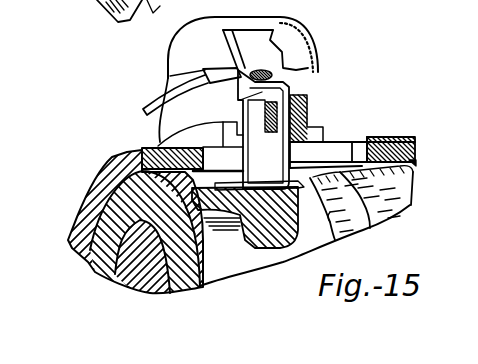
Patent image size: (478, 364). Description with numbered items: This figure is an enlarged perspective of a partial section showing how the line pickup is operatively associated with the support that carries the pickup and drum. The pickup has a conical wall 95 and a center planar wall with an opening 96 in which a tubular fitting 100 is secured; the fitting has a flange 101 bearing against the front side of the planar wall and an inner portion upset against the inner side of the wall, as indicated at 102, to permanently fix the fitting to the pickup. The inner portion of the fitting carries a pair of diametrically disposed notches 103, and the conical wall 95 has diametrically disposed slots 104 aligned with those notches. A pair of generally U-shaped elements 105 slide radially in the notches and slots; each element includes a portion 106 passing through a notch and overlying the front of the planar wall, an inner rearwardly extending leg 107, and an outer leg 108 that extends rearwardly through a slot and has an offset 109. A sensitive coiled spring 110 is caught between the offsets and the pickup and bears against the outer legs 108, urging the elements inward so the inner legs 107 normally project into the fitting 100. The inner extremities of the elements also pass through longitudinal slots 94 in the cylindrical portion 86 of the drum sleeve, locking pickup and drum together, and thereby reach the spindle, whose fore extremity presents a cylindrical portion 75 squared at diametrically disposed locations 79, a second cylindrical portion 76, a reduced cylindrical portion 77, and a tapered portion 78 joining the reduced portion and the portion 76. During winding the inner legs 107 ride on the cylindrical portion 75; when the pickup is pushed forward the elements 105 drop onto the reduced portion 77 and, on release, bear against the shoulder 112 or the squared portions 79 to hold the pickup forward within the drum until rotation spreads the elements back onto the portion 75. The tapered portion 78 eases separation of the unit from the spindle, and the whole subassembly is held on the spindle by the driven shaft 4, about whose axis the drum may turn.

The driven shaft 4 is at (152, 295).
The cylindrical portion 75 is at (228, 236).
The cylindrical portion 76 is at (413, 164).
The reduced cylindrical portion 77 is at (362, 228).
The tapered portion 78 is at (400, 199).
The squared portions 79 is at (317, 253).
The cylindrical portion 86 is at (400, 136).
The longitudinal slots 94 is at (327, 152).
The conical wall 95 is at (100, 11).
The opening 96 is at (154, 8).
The tubular fitting 100 is at (330, 115).
The flange 101 is at (310, 112).
The upset inner portion 102 is at (195, 137).
The notches 103 is at (236, 120).
The slots 104 is at (270, 41).
The elements 105 is at (291, 88).
The portion 106 is at (267, 130).
The inner leg 107 is at (249, 183).
The outer leg 108 is at (240, 100).
The offset 109 is at (221, 78).
The coiled spring 110 is at (152, 101).
The shoulder 112 is at (333, 235).